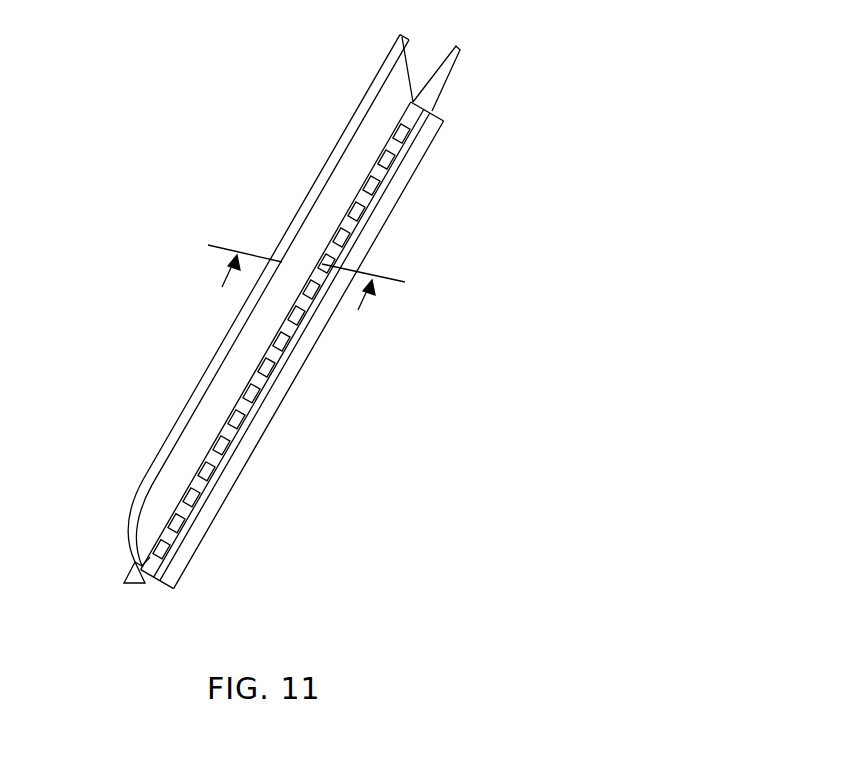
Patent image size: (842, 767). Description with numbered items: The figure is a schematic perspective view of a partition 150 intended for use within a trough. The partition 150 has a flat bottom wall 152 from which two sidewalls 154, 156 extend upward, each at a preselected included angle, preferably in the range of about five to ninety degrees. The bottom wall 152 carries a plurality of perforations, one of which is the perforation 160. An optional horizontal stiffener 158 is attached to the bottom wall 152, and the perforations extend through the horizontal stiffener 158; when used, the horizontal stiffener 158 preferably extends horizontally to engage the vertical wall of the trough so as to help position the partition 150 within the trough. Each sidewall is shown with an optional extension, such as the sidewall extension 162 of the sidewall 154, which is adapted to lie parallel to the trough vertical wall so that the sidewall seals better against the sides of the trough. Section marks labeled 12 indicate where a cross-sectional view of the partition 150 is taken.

The partition 150 is at (521, 78).
The bottom wall 152 is at (147, 565).
The sidewall 154 is at (177, 566).
The sidewall 156 is at (125, 560).
The horizontal stiffener 158 is at (255, 443).
The perforation 160 is at (170, 540).
The sidewall extension 162 is at (207, 507).
The section line of FIG. 12 is at (299, 298).